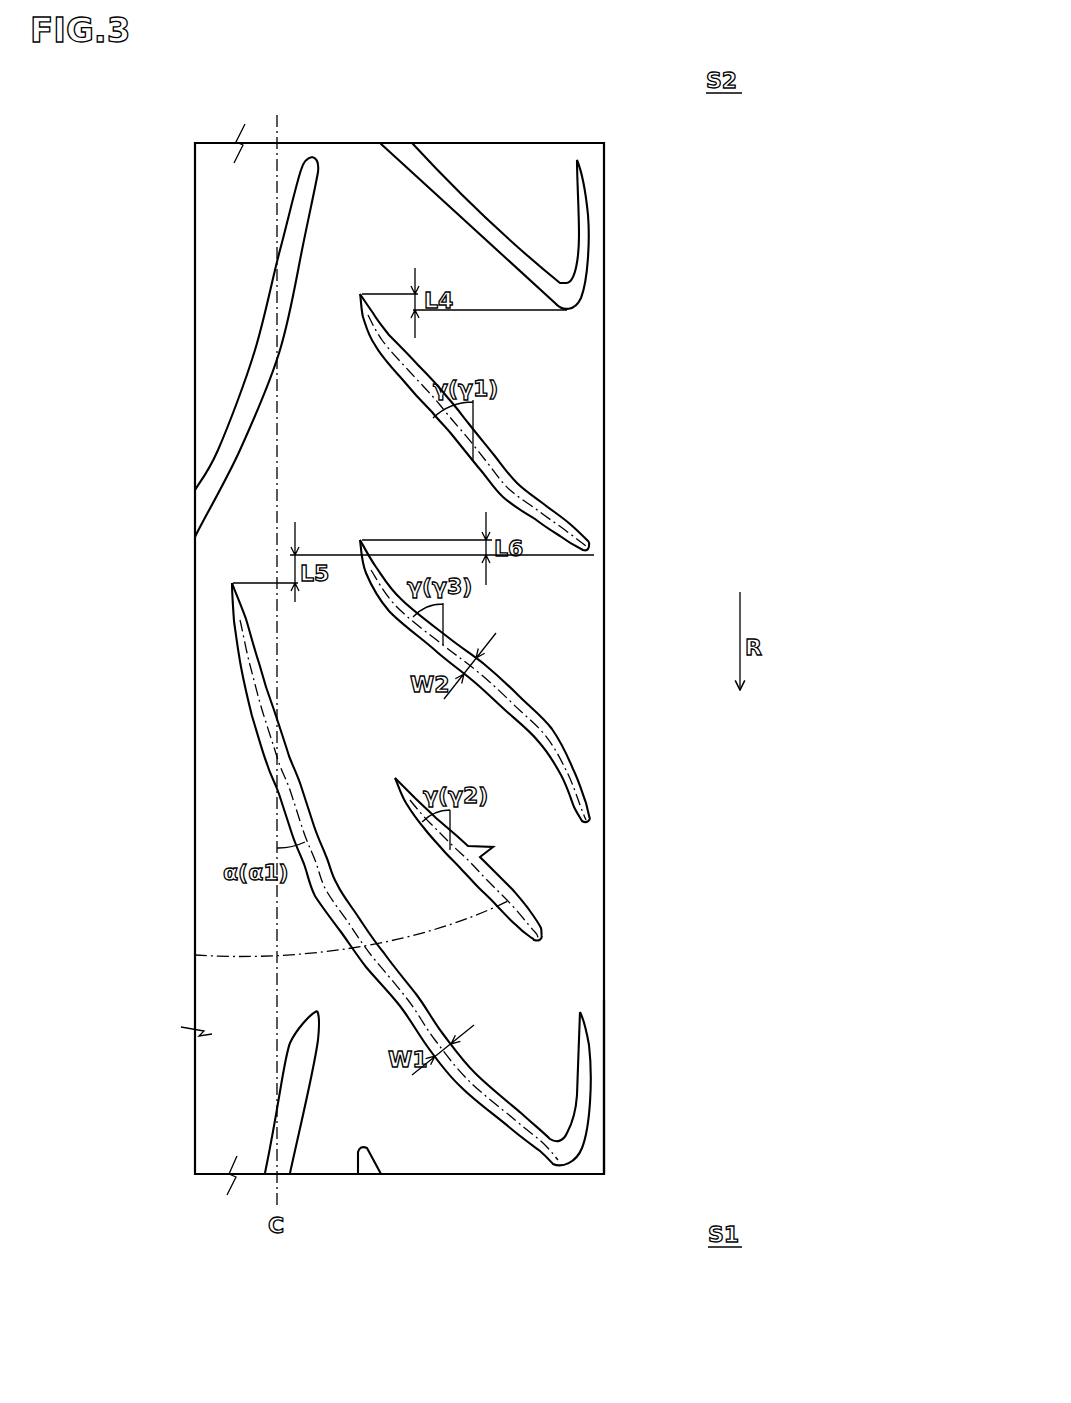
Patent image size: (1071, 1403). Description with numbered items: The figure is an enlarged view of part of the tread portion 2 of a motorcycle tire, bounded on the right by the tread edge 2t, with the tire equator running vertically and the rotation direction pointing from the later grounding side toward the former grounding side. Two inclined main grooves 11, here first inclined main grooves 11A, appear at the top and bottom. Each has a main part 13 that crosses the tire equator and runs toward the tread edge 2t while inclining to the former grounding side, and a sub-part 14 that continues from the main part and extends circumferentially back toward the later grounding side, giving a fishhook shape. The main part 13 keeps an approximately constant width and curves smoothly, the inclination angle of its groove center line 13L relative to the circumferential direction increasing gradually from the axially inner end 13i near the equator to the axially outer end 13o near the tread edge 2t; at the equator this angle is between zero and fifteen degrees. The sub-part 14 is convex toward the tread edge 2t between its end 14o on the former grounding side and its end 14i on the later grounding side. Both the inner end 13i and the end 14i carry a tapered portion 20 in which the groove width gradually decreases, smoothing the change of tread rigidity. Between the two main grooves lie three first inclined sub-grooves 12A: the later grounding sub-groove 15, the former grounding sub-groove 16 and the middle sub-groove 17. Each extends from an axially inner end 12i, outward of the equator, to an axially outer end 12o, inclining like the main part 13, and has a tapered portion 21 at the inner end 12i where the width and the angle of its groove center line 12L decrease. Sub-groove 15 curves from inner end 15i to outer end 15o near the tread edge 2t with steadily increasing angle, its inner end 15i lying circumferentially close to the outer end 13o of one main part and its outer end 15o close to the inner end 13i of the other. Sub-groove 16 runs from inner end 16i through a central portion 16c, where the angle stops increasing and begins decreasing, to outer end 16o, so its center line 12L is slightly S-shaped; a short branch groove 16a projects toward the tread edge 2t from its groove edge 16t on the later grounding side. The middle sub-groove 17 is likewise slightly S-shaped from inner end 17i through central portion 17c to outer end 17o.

The tread portion 2 is at (528, 120).
The tread edge 2t is at (604, 1160).
The inclined main groove 11 is at (449, 703).
The first inclined main groove 11A is at (664, 200).
The first inclined sub-groove 12A is at (435, 617).
The axially inner end of inclined sub-groove 12i is at (224, 419).
The axially outer end of inclined sub-groove 12o is at (663, 749).
The groove center line of inclined sub-groove 12L is at (195, 955).
The main part 13 is at (482, 235).
The axially inner end of main part 13i is at (232, 583).
The axially outer end of main part 13o is at (565, 311).
The groove center line of main part 13L is at (492, 1100).
The sub-part 14 is at (583, 265).
The end of sub-part on later grounding side 14i is at (582, 1012).
The end of sub-part on former grounding side 14o is at (566, 1165).
The later grounding inclined sub-groove 15 is at (492, 455).
The axially inner end of later grounding sub-groove 15i is at (358, 292).
The axially outer end of later grounding sub-groove 15o is at (590, 549).
The former grounding inclined sub-groove 16 is at (515, 892).
The axially inner end of former grounding sub-groove 16i is at (393, 776).
The axially outer end of former grounding sub-groove 16o is at (542, 937).
The branch groove 16a is at (504, 870).
The central portion of former grounding sub-groove 16c is at (459, 870).
The groove edge of former grounding sub-groove 16t is at (494, 847).
The middle inclined sub-groove 17 is at (550, 737).
The axially inner end of middle sub-groove 17i is at (356, 540).
The axially outer end of middle sub-groove 17o is at (589, 820).
The central portion of middle sub-groove 17c is at (511, 689).
The tapered portion 20 is at (230, 580).
The tapered portion 21 is at (360, 292).